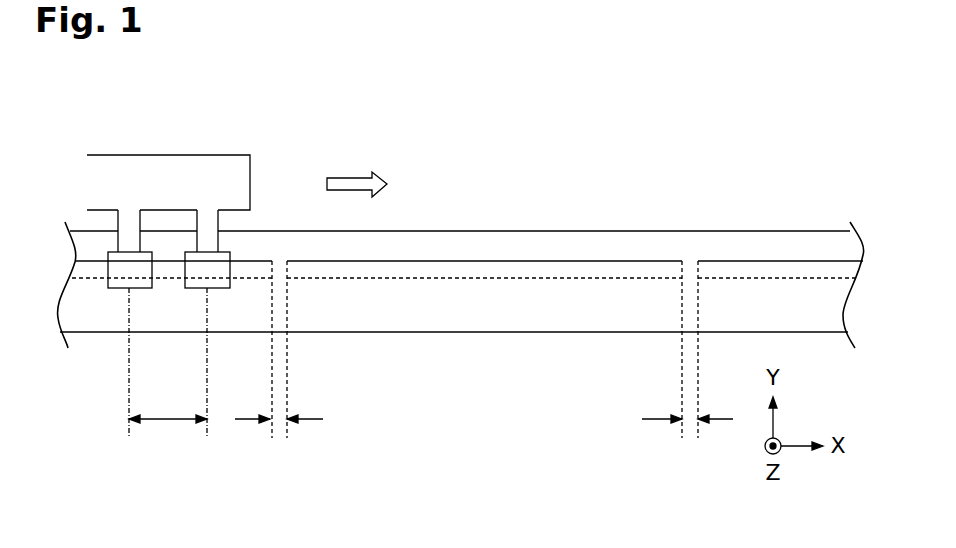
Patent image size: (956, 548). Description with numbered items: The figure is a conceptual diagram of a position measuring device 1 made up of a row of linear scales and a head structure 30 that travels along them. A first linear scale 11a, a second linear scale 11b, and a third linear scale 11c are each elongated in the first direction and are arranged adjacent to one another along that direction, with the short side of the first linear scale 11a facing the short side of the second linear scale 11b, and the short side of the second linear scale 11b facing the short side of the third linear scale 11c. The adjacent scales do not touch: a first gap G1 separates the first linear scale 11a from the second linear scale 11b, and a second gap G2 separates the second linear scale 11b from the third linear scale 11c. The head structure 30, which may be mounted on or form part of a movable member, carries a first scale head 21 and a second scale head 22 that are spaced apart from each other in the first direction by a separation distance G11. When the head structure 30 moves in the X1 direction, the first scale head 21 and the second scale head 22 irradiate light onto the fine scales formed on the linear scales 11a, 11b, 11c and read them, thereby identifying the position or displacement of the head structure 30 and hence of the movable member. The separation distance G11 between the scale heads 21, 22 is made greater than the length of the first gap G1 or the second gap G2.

The position measuring device 1 is at (773, 125).
The first linear scale 11a is at (255, 268).
The second linear scale 11b is at (480, 270).
The third linear scale 11c is at (757, 270).
The head structure 30 is at (222, 155).
The first scale head 21 is at (217, 290).
The second scale head 22 is at (112, 290).
The X1 direction X1 is at (352, 175).
The separation distance G11 is at (168, 407).
The first gap G1 is at (286, 407).
The second gap G2 is at (694, 407).